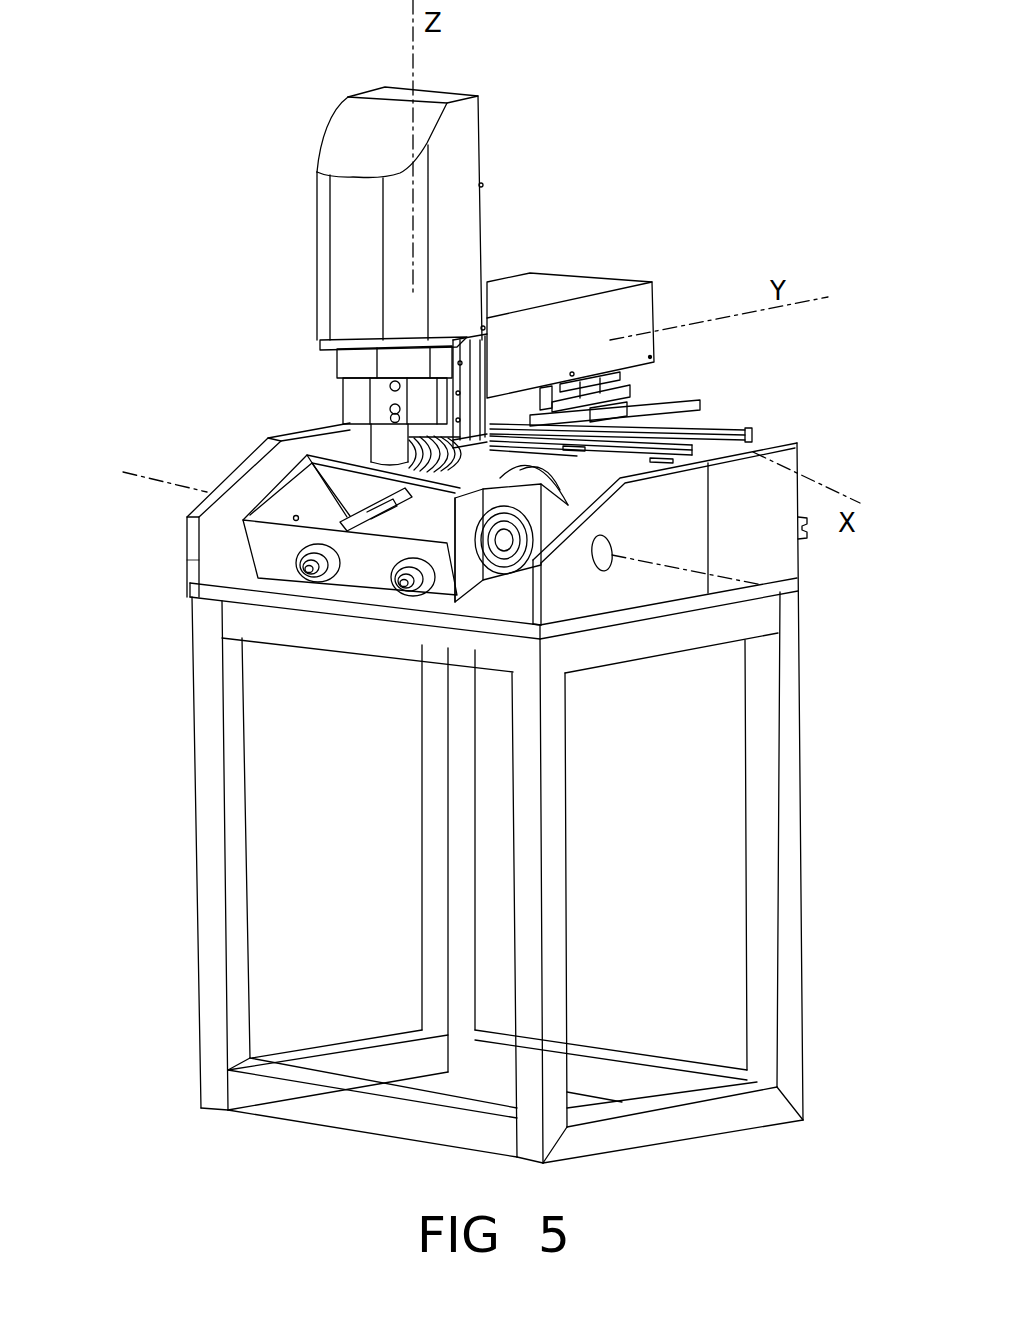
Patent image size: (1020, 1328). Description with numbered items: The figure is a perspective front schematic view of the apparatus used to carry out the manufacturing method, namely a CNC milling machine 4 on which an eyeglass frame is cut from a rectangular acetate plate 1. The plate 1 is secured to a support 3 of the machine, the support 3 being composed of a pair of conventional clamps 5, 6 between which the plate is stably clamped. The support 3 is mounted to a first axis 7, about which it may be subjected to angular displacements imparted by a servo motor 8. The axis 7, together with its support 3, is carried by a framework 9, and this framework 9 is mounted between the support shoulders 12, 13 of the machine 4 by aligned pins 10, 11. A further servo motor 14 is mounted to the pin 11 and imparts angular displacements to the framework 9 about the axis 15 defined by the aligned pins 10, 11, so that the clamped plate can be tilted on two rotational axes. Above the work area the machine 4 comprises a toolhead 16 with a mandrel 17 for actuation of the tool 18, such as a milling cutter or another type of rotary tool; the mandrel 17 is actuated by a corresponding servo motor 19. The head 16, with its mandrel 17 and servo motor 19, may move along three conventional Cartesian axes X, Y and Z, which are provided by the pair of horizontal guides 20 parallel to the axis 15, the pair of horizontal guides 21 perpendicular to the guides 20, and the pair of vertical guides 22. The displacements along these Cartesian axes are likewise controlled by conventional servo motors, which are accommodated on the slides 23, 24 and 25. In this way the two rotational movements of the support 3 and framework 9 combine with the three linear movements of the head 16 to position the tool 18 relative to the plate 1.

The acetate plate 1 is at (452, 578).
The support 3 is at (347, 493).
The CNC milling machine 4 is at (209, 425).
The clamp 5 is at (405, 440).
The clamp 6 is at (385, 575).
The first axis 7 is at (272, 628).
The servo motor 8 is at (440, 440).
The framework 9 is at (282, 540).
The pin 10 is at (258, 500).
The pin 11 is at (610, 558).
The support shoulder 12 is at (205, 499).
The support shoulder 13 is at (650, 528).
The servo motor 14 is at (537, 545).
The axis 15 is at (738, 588).
The toolhead 16 is at (371, 360).
The mandrel 17 is at (392, 442).
The tool 18 is at (457, 450).
The servo motor 19 is at (383, 393).
The horizontal guides 20 is at (653, 448).
The horizontal guides 21 is at (640, 376).
The vertical guides 22 is at (457, 450).
The slide 23 is at (650, 400).
The slide 24 is at (597, 317).
The slide 25 is at (455, 230).